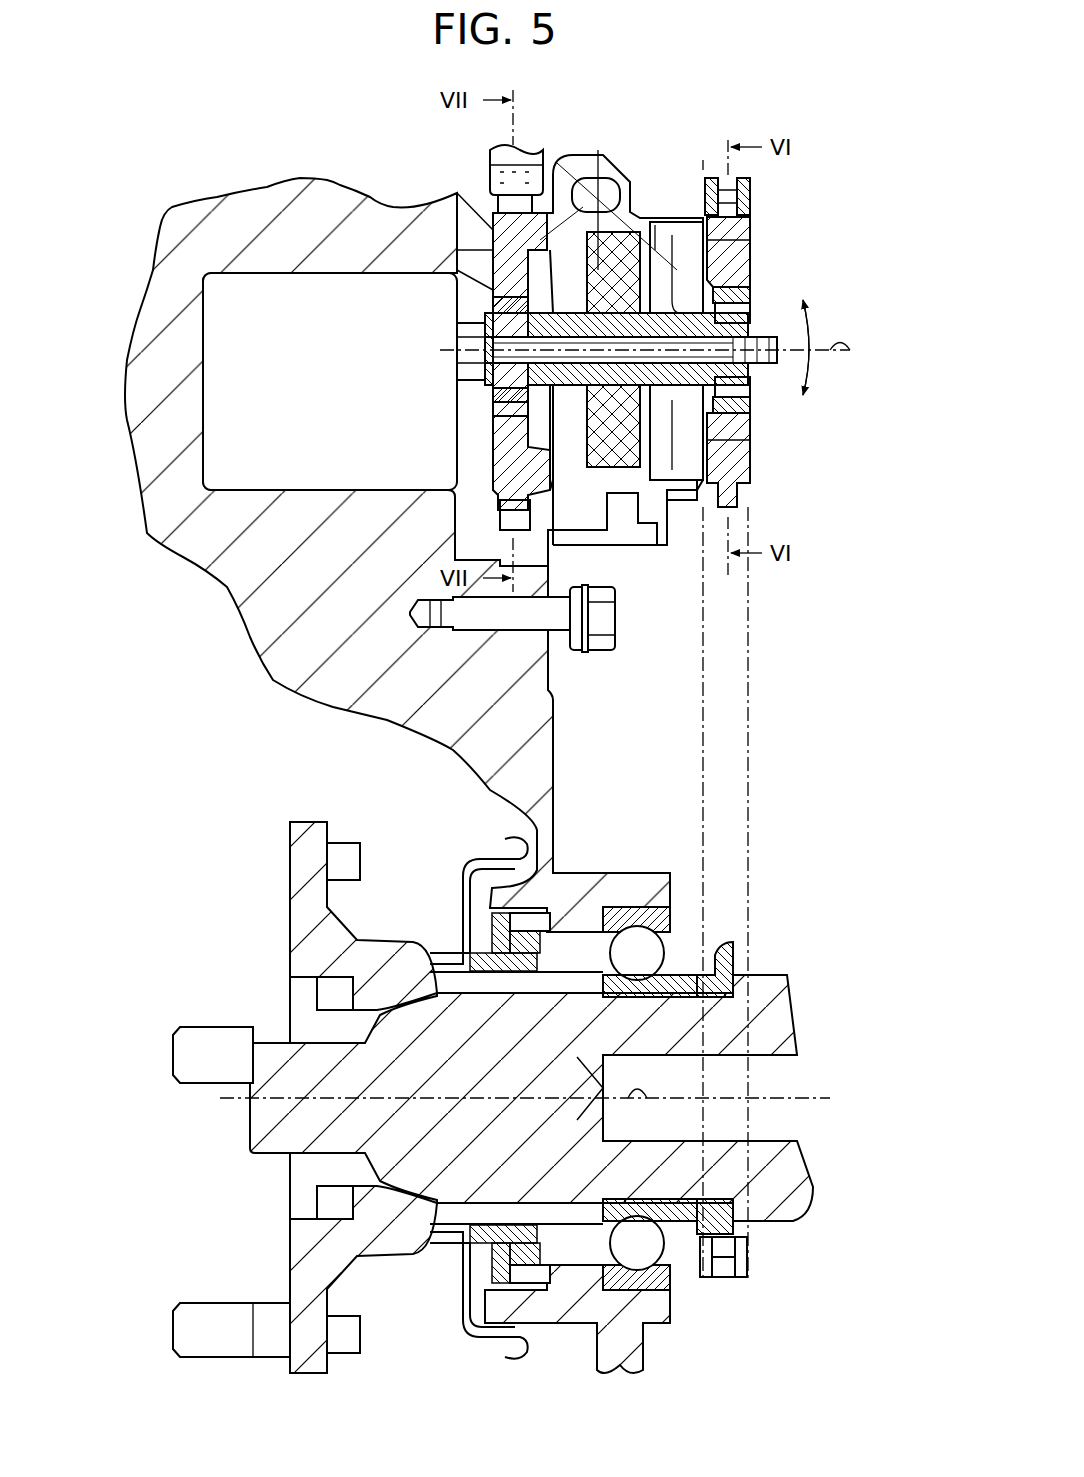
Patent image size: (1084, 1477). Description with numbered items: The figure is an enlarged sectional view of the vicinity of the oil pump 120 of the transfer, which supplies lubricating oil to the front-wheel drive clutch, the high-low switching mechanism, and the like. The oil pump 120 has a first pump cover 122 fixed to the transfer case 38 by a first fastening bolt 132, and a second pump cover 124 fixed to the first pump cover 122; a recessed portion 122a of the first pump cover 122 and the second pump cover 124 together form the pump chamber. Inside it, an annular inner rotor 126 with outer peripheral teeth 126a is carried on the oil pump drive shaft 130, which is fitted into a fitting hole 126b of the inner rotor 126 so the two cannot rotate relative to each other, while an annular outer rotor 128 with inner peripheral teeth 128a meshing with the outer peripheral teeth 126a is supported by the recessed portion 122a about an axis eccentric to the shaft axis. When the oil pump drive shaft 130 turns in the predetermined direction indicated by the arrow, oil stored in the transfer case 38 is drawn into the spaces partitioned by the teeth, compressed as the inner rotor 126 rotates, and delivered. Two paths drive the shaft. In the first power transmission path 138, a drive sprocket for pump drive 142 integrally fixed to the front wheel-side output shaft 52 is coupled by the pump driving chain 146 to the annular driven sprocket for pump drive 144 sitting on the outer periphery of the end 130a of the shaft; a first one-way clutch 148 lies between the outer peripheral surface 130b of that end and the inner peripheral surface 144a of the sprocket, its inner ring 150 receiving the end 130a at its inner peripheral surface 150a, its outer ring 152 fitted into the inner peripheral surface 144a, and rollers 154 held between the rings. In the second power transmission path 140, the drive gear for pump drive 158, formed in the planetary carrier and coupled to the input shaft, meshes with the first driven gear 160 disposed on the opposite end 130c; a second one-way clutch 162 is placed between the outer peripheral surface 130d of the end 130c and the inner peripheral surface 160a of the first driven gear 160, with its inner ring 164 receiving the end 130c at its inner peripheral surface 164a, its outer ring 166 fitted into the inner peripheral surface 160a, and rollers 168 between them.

The transfer case 38 is at (250, 212).
The front wheel-side output shaft 52 is at (765, 995).
The oil pump 120 is at (685, 130).
The first pump cover 122 is at (660, 558).
The recessed portion 122a is at (735, 440).
The second pump cover 124 is at (572, 170).
The inner rotor 126 is at (677, 247).
The outer peripheral teeth 126a is at (658, 223).
The fitting hole 126b is at (683, 280).
The outer rotor 128 is at (720, 466).
The inner peripheral teeth 128a is at (495, 470).
The oil pump drive shaft 130 is at (450, 325).
The end of the oil pump drive shaft on the rear wheel side 130a is at (745, 380).
The outer peripheral surface of the end 130b is at (752, 316).
The end of the oil pump drive shaft on the front wheel side 130c is at (458, 336).
The outer peripheral surface of the end 130d is at (462, 361).
The first fastening bolt 132 is at (605, 620).
The first power transmission path 138 is at (750, 1290).
The second power transmission path 140 is at (470, 136).
The drive sprocket for pump drive 142 is at (722, 950).
The driven sprocket for pump drive 144 is at (765, 232).
The inner peripheral surface of the driven sprocket 144a is at (758, 277).
The pump driving chain 146 is at (702, 778).
The first one-way clutch 148 is at (762, 283).
The inner ring 150 is at (690, 430).
The inner peripheral surface of the inner ring 150a is at (614, 426).
The outer ring 152 is at (752, 294).
The roller 154 is at (750, 400).
The drive gear for pump drive 158 is at (488, 160).
The first driven gear 160 is at (455, 235).
The inner peripheral surface of the first driven gear 160a is at (475, 252).
The second one-way clutch 162 is at (478, 410).
The inner ring 164 is at (490, 392).
The inner peripheral surface of the inner ring 164a is at (492, 312).
The outer ring 166 is at (440, 262).
The roller 168 is at (480, 404).